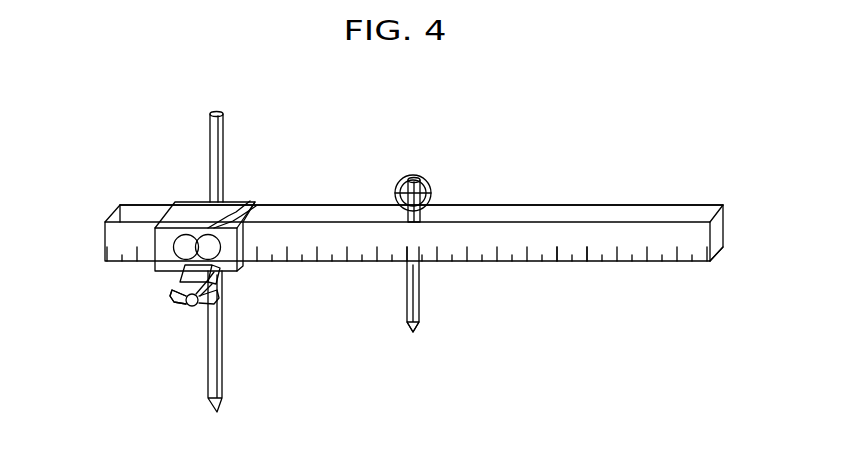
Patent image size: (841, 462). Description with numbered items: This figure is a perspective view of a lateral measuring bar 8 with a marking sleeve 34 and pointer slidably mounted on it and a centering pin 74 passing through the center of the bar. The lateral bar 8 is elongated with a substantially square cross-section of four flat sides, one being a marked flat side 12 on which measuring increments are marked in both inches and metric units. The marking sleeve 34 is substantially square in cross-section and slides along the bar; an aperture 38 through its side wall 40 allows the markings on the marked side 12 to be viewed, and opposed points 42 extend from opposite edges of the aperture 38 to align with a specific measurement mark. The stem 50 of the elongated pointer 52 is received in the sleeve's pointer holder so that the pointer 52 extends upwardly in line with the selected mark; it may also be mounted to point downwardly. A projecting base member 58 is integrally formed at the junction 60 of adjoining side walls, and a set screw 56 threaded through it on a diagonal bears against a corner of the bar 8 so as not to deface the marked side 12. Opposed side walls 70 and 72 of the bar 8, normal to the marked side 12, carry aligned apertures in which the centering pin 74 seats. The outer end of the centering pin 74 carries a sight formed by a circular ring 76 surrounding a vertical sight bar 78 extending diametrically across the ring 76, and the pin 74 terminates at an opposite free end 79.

The lateral bar 8 is at (597, 205).
The marked flat side 12 is at (602, 245).
The marking sleeve 34 is at (190, 201).
The aperture 38 is at (178, 244).
The side wall 40 is at (148, 260).
The opposed points 42 is at (205, 250).
The stem 50 is at (223, 376).
The elongated pointer 52 is at (225, 126).
The set screw 56 is at (190, 308).
The projecting base member 58 is at (222, 276).
The junction 60 is at (172, 272).
The side wall 70 is at (670, 215).
The side wall 72 is at (720, 252).
The centering pin 74 is at (407, 285).
The circular ring 76 is at (431, 194).
The vertical sight bar 78 is at (398, 192).
The free end 79 is at (413, 331).